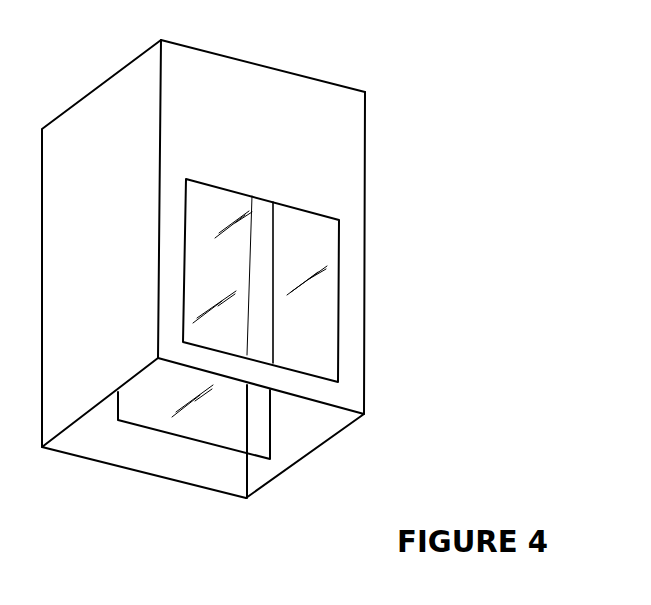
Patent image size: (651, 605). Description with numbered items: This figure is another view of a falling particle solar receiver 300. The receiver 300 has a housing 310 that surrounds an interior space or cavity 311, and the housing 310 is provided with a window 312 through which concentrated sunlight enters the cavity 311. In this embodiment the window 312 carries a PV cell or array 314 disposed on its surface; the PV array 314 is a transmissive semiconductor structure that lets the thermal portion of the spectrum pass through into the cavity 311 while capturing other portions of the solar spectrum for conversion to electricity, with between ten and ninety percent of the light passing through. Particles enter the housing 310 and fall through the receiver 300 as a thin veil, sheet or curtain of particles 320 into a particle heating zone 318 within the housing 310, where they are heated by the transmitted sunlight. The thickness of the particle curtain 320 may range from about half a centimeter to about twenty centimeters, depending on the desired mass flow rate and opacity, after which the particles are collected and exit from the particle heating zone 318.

The solar receiver 300 is at (296, 273).
The housing 310 is at (288, 70).
The cavity 311 is at (310, 425).
The window 312 is at (339, 251).
The PV array 314 is at (315, 318).
The particle heating zone 318 is at (117, 455).
The particle curtain 320 is at (212, 445).